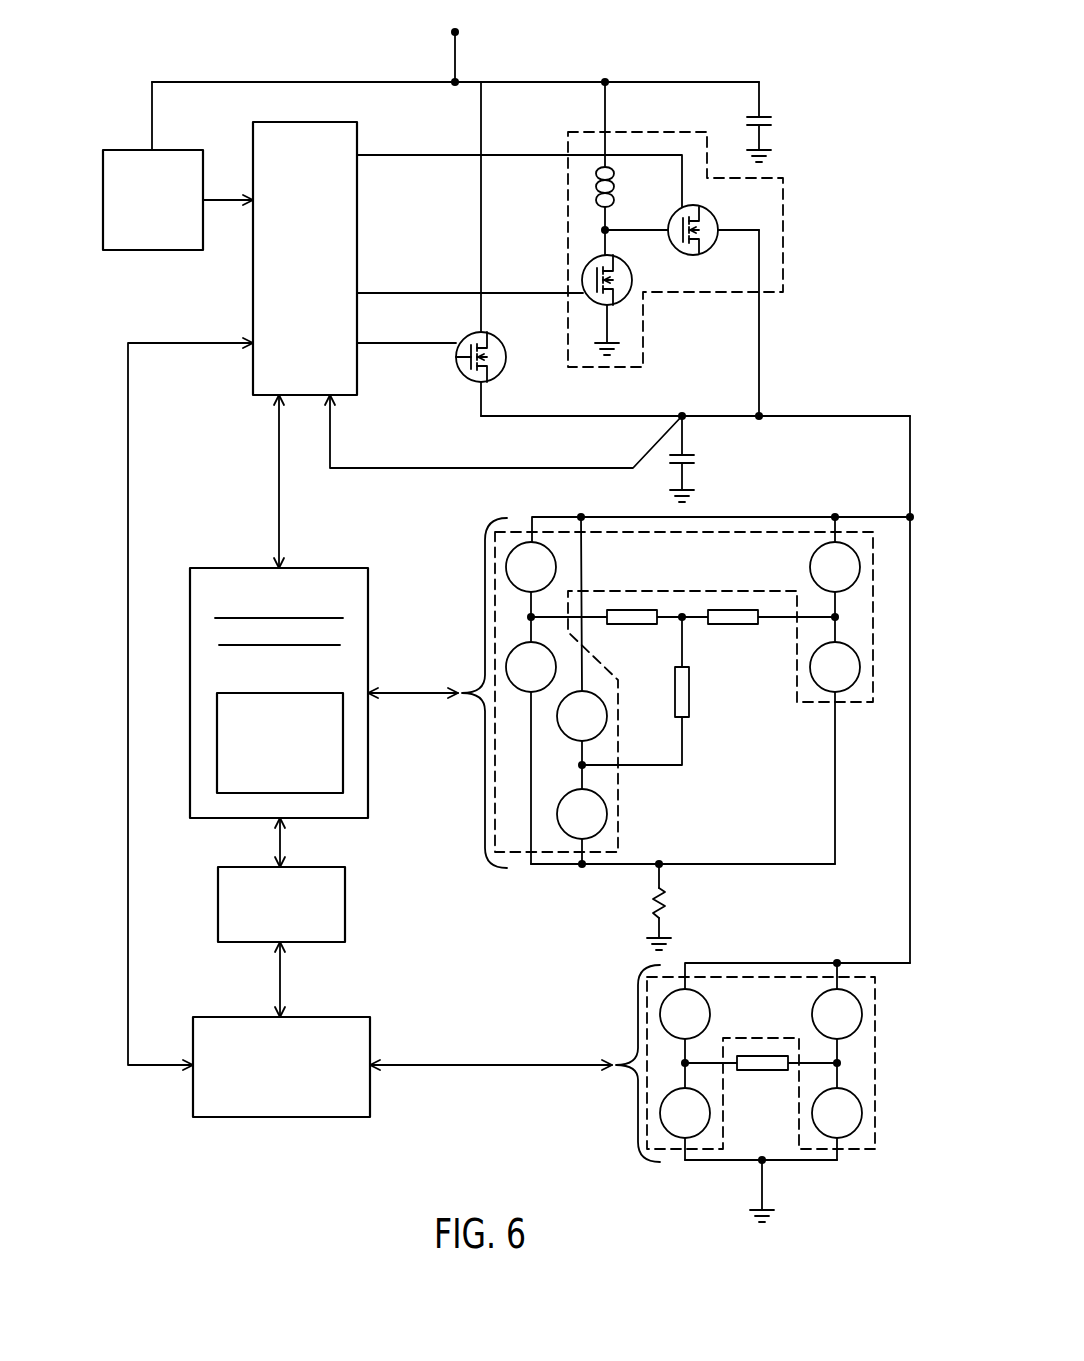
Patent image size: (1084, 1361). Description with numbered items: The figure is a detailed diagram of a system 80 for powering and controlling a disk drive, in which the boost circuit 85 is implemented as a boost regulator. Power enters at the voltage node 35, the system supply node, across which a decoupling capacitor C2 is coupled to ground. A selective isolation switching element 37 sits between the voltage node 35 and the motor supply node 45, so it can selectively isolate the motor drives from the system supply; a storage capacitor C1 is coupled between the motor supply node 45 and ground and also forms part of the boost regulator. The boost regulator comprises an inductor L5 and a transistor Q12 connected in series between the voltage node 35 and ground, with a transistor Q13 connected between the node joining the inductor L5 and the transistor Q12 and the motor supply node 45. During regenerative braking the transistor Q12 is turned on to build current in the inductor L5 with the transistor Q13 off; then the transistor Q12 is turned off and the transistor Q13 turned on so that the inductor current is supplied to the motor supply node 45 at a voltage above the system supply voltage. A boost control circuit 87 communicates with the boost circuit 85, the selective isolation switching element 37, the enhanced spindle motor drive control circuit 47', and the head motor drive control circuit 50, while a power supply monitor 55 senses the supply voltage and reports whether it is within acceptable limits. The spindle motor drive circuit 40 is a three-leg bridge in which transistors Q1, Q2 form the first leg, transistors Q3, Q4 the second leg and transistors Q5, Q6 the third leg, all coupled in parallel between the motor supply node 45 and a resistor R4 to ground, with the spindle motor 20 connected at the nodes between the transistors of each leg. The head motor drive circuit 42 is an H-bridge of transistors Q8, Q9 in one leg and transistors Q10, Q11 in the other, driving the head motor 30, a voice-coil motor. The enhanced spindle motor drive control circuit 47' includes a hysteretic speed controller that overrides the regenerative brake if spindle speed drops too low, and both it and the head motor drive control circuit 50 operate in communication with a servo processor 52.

The voltage node 35 is at (470, 30).
The power supply monitor 55 is at (166, 150).
The boost control circuit 87 is at (316, 123).
The boost circuit 85 is at (672, 132).
The inductor L5 is at (619, 168).
The transistor Q12 is at (629, 305).
The transistor Q13 is at (684, 310).
The decoupling capacitor C2 is at (773, 122).
The selective isolation switching element 37 is at (476, 336).
The motor supply node 45 is at (762, 414).
The storage capacitor C1 is at (698, 459).
The enhanced spindle motor drive control circuit 47' is at (289, 678).
The spindle motor drive circuit 40 is at (617, 803).
The spindle motor 20 is at (708, 653).
The transistor Q1 is at (531, 567).
The transistor Q2 is at (531, 667).
The transistor Q3 is at (835, 554).
The transistor Q4 is at (835, 667).
The transistor Q5 is at (582, 716).
The transistor Q6 is at (582, 814).
The resistor R4 is at (686, 907).
The servo processor 52 is at (310, 867).
The head motor drive control circuit 50 is at (330, 1017).
The head motor drive circuit 42 is at (723, 1112).
The head motor 30 is at (750, 1070).
The transistor Q8 is at (685, 1014).
The transistor Q9 is at (685, 1113).
The transistor Q10 is at (837, 1014).
The transistor Q11 is at (837, 1113).
The system 80 is at (220, 1180).